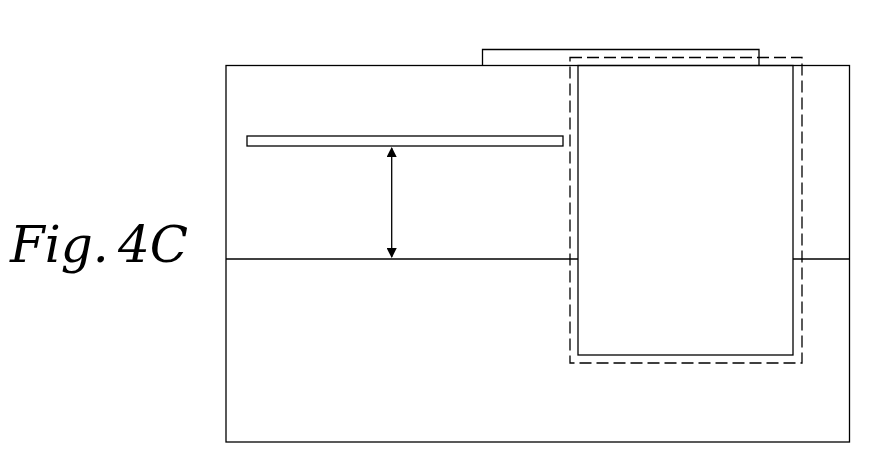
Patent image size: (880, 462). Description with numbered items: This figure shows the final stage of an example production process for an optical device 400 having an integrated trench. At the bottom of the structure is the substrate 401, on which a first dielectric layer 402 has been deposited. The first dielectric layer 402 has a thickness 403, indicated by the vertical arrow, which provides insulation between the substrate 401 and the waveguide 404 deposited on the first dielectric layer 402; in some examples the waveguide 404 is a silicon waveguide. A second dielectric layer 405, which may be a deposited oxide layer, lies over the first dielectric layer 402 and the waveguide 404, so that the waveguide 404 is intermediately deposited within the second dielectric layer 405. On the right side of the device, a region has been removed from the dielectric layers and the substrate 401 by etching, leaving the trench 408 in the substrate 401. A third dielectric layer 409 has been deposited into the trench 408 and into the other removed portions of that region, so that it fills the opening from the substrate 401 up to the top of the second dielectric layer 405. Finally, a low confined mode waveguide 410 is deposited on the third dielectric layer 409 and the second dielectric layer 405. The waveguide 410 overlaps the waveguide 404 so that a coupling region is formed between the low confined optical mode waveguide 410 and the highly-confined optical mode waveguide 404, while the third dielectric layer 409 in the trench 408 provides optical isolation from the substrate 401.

The optical device 400 is at (128, 113).
The substrate 401 is at (526, 360).
The first dielectric layer 402 is at (527, 213).
The thickness 403 is at (391, 200).
The waveguide 404 is at (335, 136).
The second dielectric layer 405 is at (527, 118).
The trench 408 is at (708, 318).
The third dielectric layer 409 is at (708, 158).
The waveguide 410 is at (673, 50).